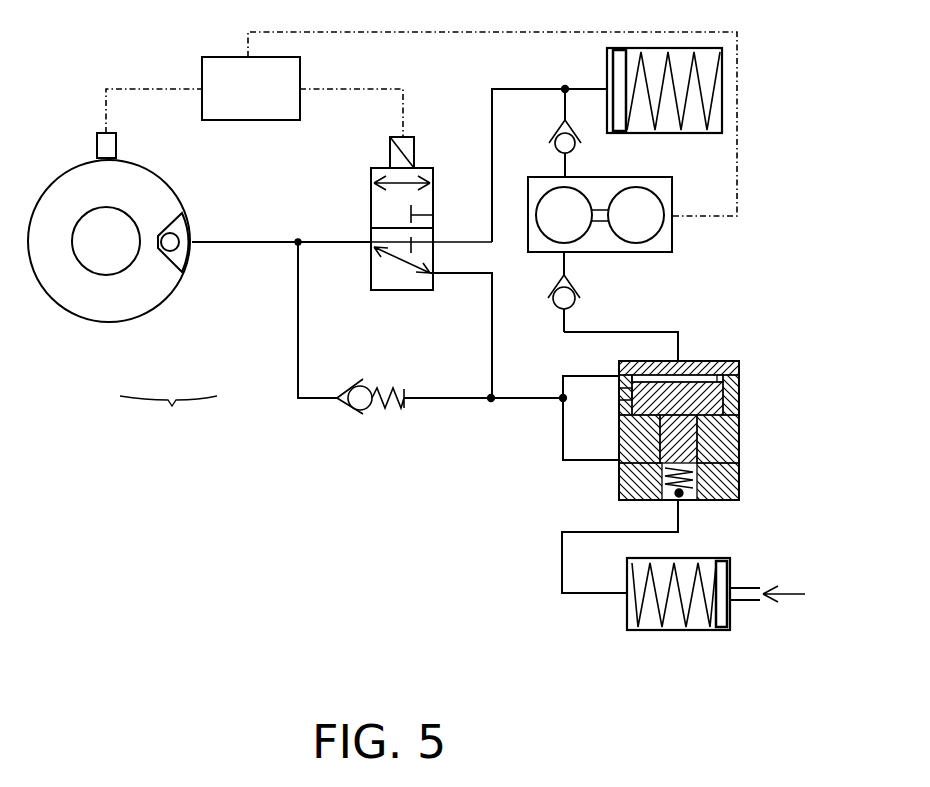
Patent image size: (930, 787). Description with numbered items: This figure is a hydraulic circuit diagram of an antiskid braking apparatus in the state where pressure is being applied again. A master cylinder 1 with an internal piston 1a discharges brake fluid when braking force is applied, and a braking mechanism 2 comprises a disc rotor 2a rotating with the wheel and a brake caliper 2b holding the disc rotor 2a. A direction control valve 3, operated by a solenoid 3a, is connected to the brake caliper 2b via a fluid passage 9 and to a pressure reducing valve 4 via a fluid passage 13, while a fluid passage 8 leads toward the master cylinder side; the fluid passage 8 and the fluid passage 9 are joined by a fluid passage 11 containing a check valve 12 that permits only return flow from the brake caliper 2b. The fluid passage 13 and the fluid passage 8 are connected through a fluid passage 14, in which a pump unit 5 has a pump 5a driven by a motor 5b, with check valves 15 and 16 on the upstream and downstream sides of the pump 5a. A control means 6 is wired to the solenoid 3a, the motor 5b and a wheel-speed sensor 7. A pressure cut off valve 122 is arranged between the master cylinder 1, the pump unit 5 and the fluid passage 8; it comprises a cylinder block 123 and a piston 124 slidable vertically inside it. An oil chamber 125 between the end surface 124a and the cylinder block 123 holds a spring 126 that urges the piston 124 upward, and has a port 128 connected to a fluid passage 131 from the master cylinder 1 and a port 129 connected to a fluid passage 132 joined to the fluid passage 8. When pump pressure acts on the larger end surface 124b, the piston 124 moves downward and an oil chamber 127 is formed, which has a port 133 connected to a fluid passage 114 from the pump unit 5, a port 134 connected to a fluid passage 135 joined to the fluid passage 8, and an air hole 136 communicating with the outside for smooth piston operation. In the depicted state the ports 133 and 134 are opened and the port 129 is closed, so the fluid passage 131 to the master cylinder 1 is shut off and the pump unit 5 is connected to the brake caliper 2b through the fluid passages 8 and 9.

The master cylinder 1 is at (650, 630).
The internal piston 1a is at (722, 630).
The braking mechanism 2 is at (168, 416).
The disc rotor 2a is at (127, 322).
The brake caliper 2b is at (190, 264).
The direction control valve 3 is at (371, 207).
The solenoid 3a is at (390, 157).
The pressure reducing valve 4 is at (607, 62).
The pump unit 5 is at (673, 180).
The pump 5a is at (540, 228).
The motor 5b is at (658, 238).
The control means 6 is at (421, 124).
The wheel-speed sensor 7 is at (117, 140).
The fluid passage 8 is at (493, 397).
The fluid passage 9 is at (255, 244).
The fluid passage 11 is at (298, 340).
The check valve 12 is at (387, 424).
The fluid passage 13 is at (492, 117).
The fluid passage 14 is at (562, 103).
The check valve 15 is at (580, 155).
The check valve 16 is at (584, 318).
The fluid passage 114 is at (678, 333).
The pressure cut off valve 122 is at (722, 351).
The cylinder block 123 is at (739, 380).
The piston 124 is at (740, 397).
The end surface 124a is at (697, 475).
The end surface 124b is at (725, 367).
The oil chamber 125 is at (650, 480).
The spring 126 is at (707, 494).
The oil chamber 127 is at (635, 362).
The port 128 is at (683, 497).
The port 129 is at (620, 440).
The fluid passage 131 is at (562, 553).
The fluid passage 132 is at (563, 447).
The port 133 is at (677, 362).
The port 134 is at (622, 393).
The fluid passage 135 is at (565, 376).
The air hole 136 is at (739, 435).